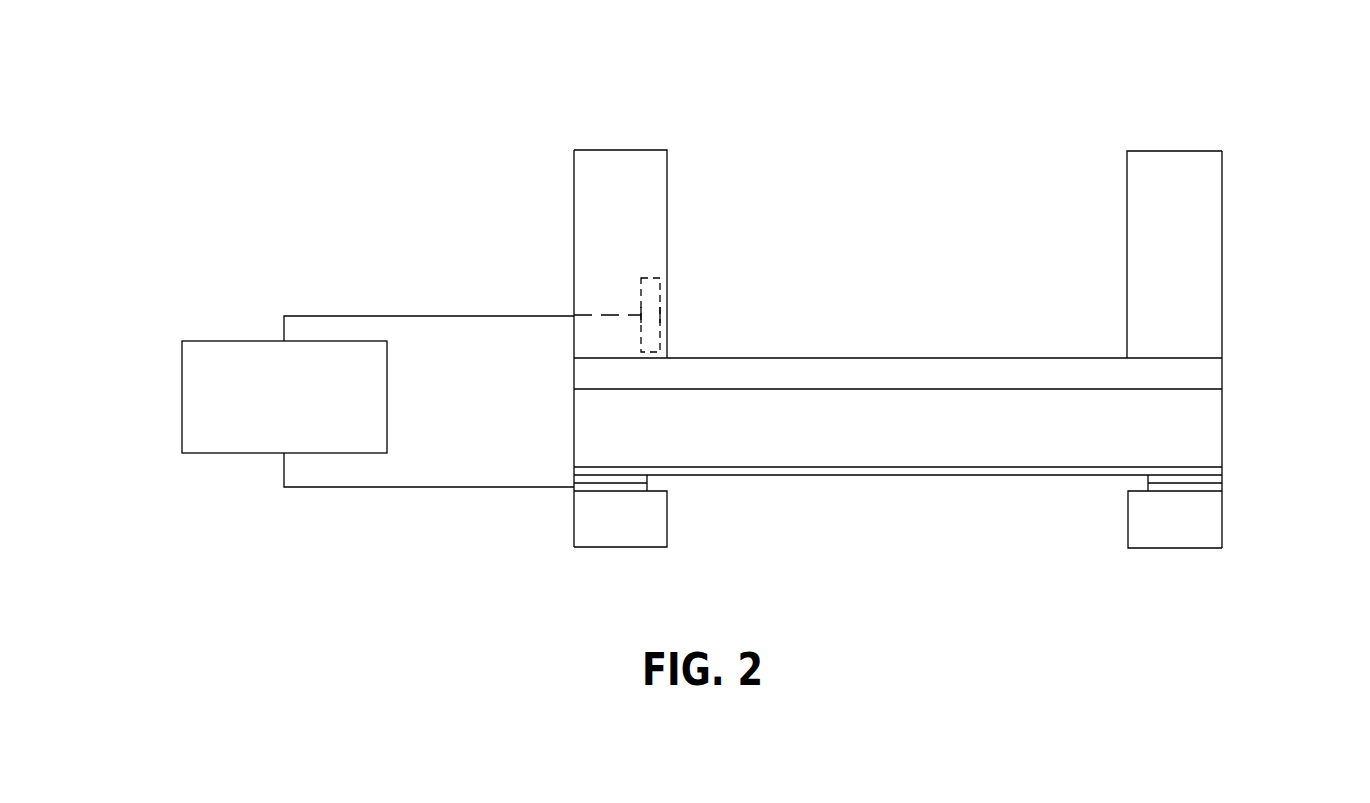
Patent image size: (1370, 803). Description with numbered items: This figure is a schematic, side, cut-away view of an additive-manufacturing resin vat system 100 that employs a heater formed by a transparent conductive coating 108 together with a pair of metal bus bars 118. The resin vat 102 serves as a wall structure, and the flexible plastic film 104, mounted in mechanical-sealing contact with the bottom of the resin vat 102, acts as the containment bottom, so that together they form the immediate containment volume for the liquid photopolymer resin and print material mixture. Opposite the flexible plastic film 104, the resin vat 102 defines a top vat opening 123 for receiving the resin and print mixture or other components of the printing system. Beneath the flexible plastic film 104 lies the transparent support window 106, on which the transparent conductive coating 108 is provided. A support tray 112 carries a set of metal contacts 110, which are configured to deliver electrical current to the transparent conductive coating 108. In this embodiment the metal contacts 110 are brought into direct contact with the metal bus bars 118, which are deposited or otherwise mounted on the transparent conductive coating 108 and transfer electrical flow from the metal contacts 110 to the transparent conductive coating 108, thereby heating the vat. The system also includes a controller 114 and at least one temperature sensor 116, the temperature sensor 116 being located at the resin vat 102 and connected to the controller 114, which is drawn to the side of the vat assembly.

The resin vat system 100 is at (307, 95).
The resin vat 102 is at (1223, 253).
The flexible plastic film 104 is at (1222, 375).
The transparent support window 106 is at (1222, 428).
The transparent conductive coating 108 is at (897, 476).
The metal contacts 110 is at (1222, 487).
The support tray 112 is at (574, 518).
The controller 114 is at (182, 395).
The temperature sensor 116 is at (665, 315).
The metal bus bars 118 is at (1222, 480).
The top vat opening 123 is at (758, 123).